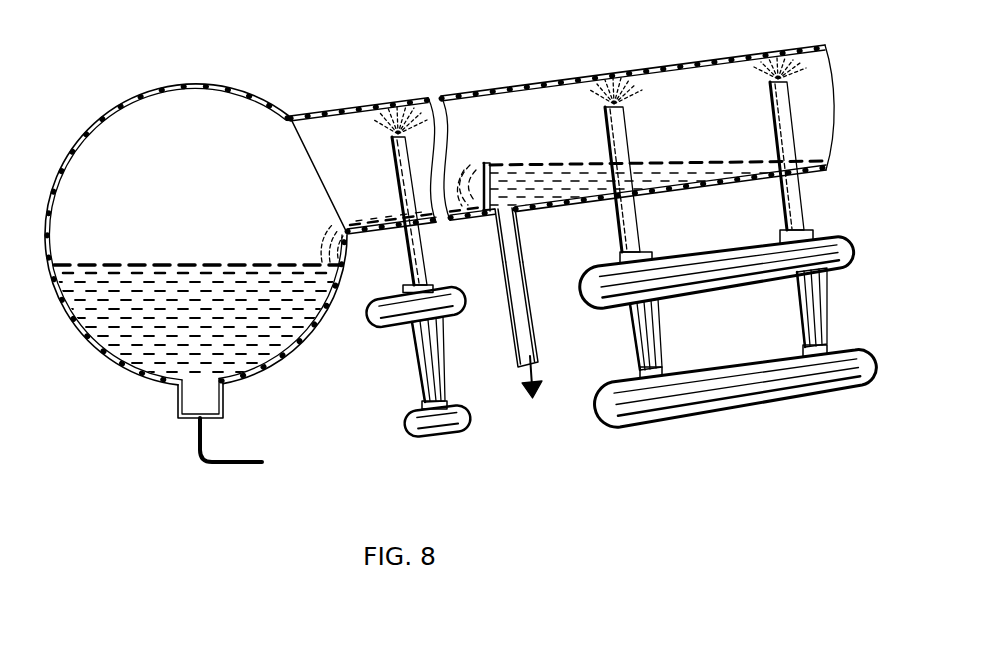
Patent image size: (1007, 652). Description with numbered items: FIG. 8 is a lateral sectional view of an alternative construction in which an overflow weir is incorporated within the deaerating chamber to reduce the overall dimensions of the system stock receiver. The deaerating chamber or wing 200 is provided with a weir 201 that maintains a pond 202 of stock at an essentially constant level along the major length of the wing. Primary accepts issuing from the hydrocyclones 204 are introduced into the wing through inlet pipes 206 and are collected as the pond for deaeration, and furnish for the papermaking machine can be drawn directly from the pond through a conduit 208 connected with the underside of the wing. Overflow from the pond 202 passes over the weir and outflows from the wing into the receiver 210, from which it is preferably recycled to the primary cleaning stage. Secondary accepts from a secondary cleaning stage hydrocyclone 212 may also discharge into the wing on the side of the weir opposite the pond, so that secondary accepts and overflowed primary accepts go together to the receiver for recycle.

The deaerating chamber or wing 200 is at (617, 73).
The weir 201 is at (523, 211).
The pond 202 is at (490, 188).
The hydrocyclones 204 is at (797, 312).
The inlet pipes 206 is at (771, 103).
The conduit 208 is at (518, 338).
The receiver 210 is at (276, 367).
The secondary cleaning stage hydrocyclone 212 is at (420, 375).